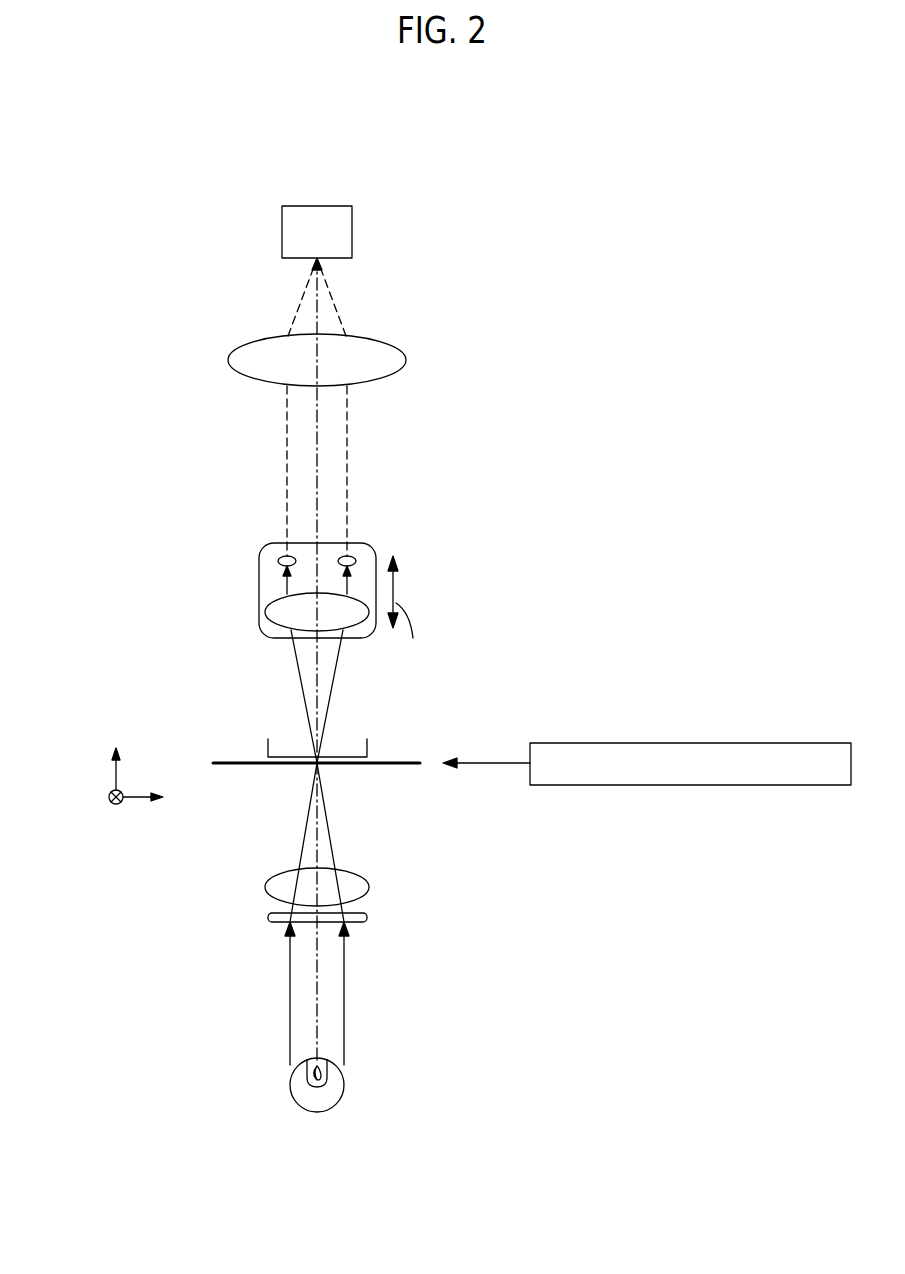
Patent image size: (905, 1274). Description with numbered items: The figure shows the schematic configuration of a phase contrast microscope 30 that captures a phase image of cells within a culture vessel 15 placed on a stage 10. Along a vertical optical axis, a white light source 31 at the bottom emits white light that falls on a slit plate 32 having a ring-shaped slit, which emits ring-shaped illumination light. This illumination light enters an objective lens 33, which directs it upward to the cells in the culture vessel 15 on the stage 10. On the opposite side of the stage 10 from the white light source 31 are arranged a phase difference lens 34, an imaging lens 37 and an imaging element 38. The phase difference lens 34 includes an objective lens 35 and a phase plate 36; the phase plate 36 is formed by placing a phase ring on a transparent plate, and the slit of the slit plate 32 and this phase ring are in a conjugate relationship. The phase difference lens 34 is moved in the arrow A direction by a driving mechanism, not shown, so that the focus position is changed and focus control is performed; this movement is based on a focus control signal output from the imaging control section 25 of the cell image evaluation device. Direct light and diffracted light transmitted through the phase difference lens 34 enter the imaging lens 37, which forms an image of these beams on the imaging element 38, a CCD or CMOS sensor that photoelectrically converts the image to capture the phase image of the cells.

The phase contrast microscope 30 is at (189, 167).
The imaging element 38 is at (282, 230).
The imaging lens 37 is at (228, 361).
The phase plate 36 is at (278, 562).
The objective lens 35 is at (277, 603).
The phase difference lens 34 is at (259, 620).
The culture vessel 15 is at (367, 743).
The stage 10 is at (392, 767).
The imaging control section 25 is at (548, 786).
The objective lens 33 is at (265, 888).
The slit plate 32 is at (367, 917).
The white light source 31 is at (291, 1097).